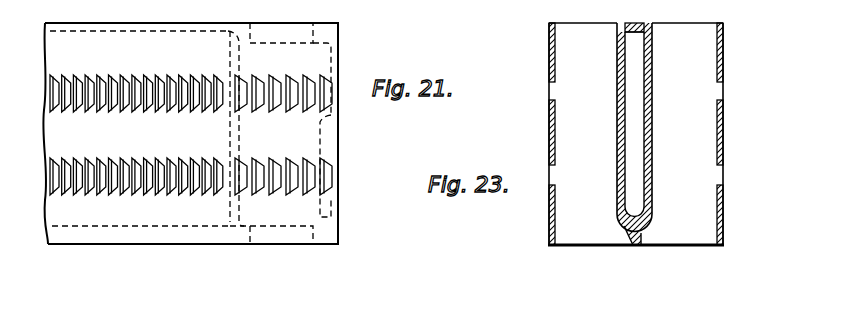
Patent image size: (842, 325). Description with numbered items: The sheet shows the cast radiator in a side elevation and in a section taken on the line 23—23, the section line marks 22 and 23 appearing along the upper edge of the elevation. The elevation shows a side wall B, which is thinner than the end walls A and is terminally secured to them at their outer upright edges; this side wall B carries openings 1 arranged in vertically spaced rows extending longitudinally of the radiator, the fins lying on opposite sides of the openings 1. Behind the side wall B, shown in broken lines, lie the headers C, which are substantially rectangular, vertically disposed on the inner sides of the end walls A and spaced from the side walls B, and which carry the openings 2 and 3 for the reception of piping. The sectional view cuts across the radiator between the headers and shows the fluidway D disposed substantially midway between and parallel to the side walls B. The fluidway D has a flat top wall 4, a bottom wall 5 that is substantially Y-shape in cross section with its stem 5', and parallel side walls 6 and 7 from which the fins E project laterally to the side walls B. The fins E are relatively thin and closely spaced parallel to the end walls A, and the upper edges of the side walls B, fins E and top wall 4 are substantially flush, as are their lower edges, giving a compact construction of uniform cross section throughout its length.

In FIG. 21, the openings 1 is at (56, 182).
In FIG. 23, the openings 1 is at (550, 88).
In FIG. 21, the opening 2 is at (256, 17).
In FIG. 21, the opening 3 is at (268, 245).
In FIG. 23, the opening 3 is at (534, 0).
In FIG. 23, the top wall 4 is at (637, 27).
In FIG. 23, the bottom wall 5 is at (651, 231).
In FIG. 23, the stems 5' is at (619, 252).
In FIG. 23, the side wall 6 is at (616, 143).
In FIG. 23, the side wall 7 is at (652, 142).
In FIG. 21, the section line 22 is at (281, 0).
In FIG. 21, the section line 23 is at (148, 0).
In FIG. 21, the end walls A is at (338, 118).
In FIG. 21, the side walls B is at (65, 47).
In FIG. 23, the side walls B is at (553, 125).
In FIG. 21, the headers C is at (322, 47).
In FIG. 23, the headers C is at (558, 1).
In FIG. 23, the fluidway D is at (640, 81).
In FIG. 23, the fins E is at (578, 53).